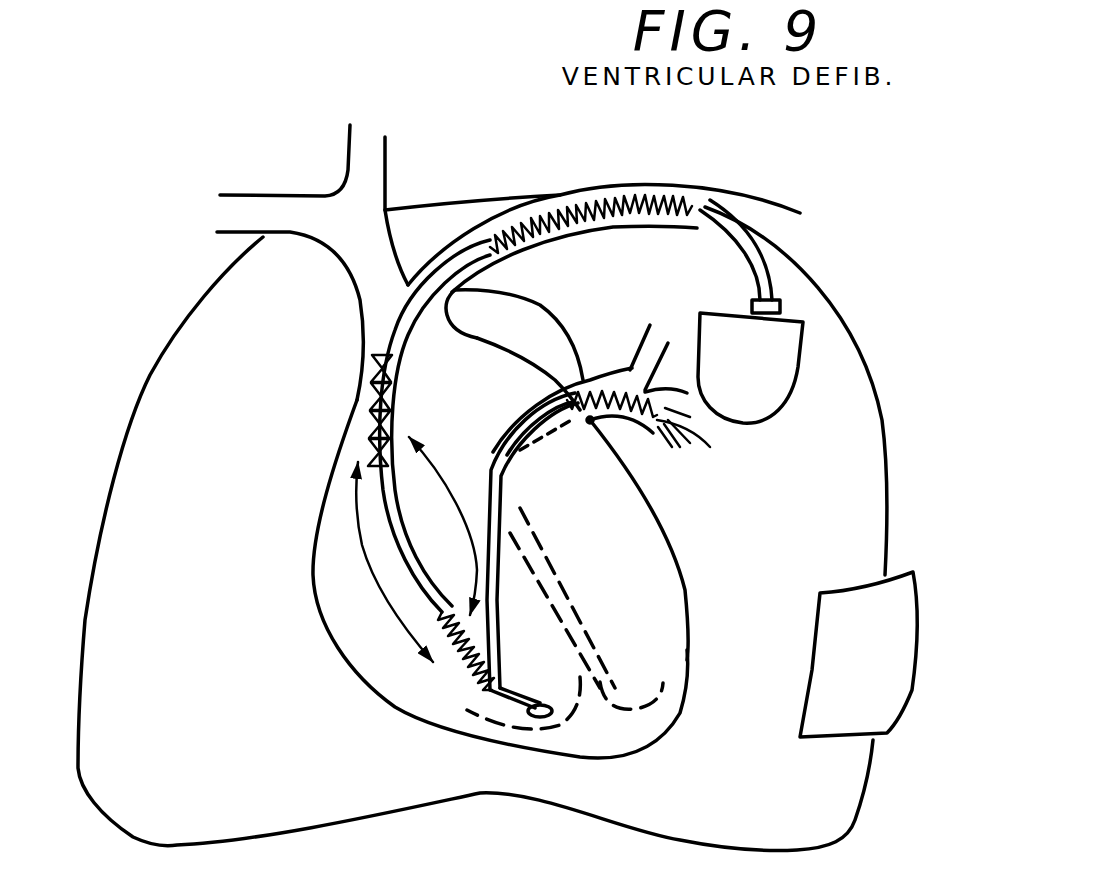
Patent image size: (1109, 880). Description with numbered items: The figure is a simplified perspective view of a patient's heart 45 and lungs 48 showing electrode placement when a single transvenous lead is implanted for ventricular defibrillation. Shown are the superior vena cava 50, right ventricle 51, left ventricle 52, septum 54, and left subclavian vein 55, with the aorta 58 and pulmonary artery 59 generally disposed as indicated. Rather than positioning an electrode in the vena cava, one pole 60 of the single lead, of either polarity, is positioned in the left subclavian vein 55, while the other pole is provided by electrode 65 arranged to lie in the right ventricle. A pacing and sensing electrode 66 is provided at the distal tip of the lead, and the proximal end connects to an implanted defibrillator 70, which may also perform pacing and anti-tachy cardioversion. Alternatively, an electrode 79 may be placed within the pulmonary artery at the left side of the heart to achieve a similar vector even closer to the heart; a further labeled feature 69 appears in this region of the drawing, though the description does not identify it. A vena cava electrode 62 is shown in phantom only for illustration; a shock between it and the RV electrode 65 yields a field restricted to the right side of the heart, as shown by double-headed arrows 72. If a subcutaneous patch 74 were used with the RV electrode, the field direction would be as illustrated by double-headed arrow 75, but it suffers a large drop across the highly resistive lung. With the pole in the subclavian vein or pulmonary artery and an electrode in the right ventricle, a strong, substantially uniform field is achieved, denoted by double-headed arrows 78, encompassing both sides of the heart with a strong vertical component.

The heart 45 is at (295, 582).
The lungs 48 is at (170, 392).
The superior vena cava 50 is at (362, 262).
The right ventricle 51 is at (350, 623).
The left ventricle 52 is at (620, 553).
The septum 54 is at (587, 622).
The left subclavian vein 55 is at (680, 182).
The aorta 58 is at (493, 320).
The pulmonary artery 59 is at (773, 293).
The pole 60 is at (600, 203).
The vena cava electrode 62 is at (352, 400).
The right ventricular electrode 65 is at (457, 667).
The pacing and sensing electrode 66 is at (523, 715).
The aortic valve region electrode 69 is at (603, 372).
The implanted defibrillator 70 is at (773, 367).
The double-headed arrows 72 is at (443, 480).
The subcutaneous patch 74 is at (897, 683).
The double-headed arrow 75 is at (527, 657).
The double-headed arrows 78 is at (523, 632).
The electrode 79 is at (710, 447).